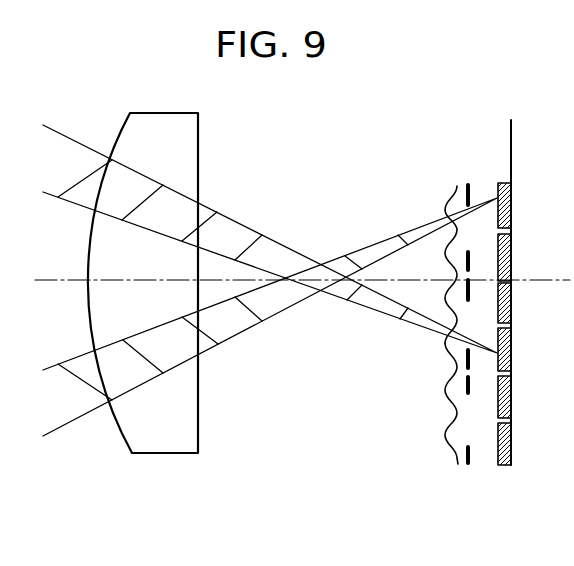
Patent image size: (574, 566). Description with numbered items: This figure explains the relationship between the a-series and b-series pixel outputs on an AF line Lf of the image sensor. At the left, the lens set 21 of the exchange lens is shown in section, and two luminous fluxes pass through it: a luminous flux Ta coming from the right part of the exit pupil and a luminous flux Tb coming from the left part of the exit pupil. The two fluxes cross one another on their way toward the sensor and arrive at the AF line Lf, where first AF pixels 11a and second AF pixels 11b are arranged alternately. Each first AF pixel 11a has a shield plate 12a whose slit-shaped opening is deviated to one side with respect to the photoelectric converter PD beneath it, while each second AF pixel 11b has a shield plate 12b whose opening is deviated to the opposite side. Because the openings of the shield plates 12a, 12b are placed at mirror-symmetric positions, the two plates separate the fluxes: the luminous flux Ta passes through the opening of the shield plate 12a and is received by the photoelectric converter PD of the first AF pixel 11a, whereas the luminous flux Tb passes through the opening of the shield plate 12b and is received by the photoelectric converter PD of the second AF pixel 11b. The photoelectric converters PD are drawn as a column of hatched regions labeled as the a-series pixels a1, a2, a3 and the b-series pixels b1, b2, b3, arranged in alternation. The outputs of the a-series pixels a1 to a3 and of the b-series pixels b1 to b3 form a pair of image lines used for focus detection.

The lens set 21 is at (167, 458).
The luminous flux Ta is at (243, 228).
The luminous flux Tb is at (242, 336).
The AF line Lf is at (439, 302).
The first AF pixel 11a is at (444, 456).
The second AF pixel 11b is at (444, 203).
The shield plate 12a is at (468, 466).
The shield plate 12b is at (468, 184).
The photoelectric converter PD is at (515, 316).
The a-series pixel a1 is at (520, 257).
The b-series pixel b1 is at (520, 205).
The a-series pixel a2 is at (520, 349).
The b-series pixel b2 is at (520, 303).
The a-series pixel a3 is at (520, 444).
The b-series pixel b3 is at (520, 397).